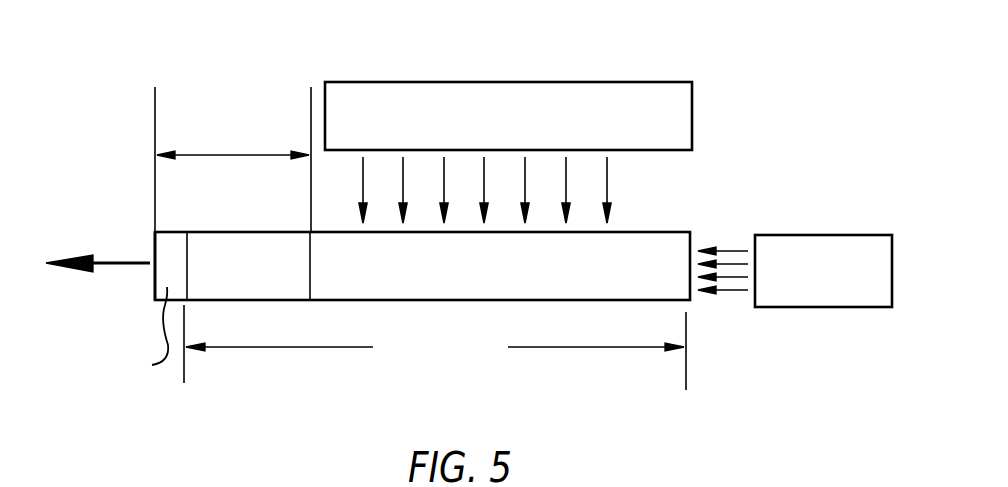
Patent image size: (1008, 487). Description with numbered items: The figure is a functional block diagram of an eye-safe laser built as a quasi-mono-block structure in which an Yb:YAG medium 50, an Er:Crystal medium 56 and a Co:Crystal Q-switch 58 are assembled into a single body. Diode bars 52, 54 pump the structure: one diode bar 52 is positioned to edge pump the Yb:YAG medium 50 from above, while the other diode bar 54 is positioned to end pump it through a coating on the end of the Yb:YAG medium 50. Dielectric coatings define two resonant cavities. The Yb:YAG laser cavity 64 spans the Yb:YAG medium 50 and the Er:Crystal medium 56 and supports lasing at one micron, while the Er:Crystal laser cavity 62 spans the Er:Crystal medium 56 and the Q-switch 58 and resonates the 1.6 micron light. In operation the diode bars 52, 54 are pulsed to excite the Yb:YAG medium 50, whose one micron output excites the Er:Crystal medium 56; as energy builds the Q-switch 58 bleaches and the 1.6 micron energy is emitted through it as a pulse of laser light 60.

The Yb:YAG medium 50 is at (668, 232).
The diode bar 52 is at (692, 115).
The diode bar 54 is at (823, 236).
The Er:Crystal medium 56 is at (306, 302).
The Co:Crystal Q-switch 58 is at (92, 394).
The pulse of laser light 60 is at (104, 265).
The Er:Crystal laser cavity 62 is at (223, 97).
The Yb:YAG laser cavity 64 is at (423, 380).